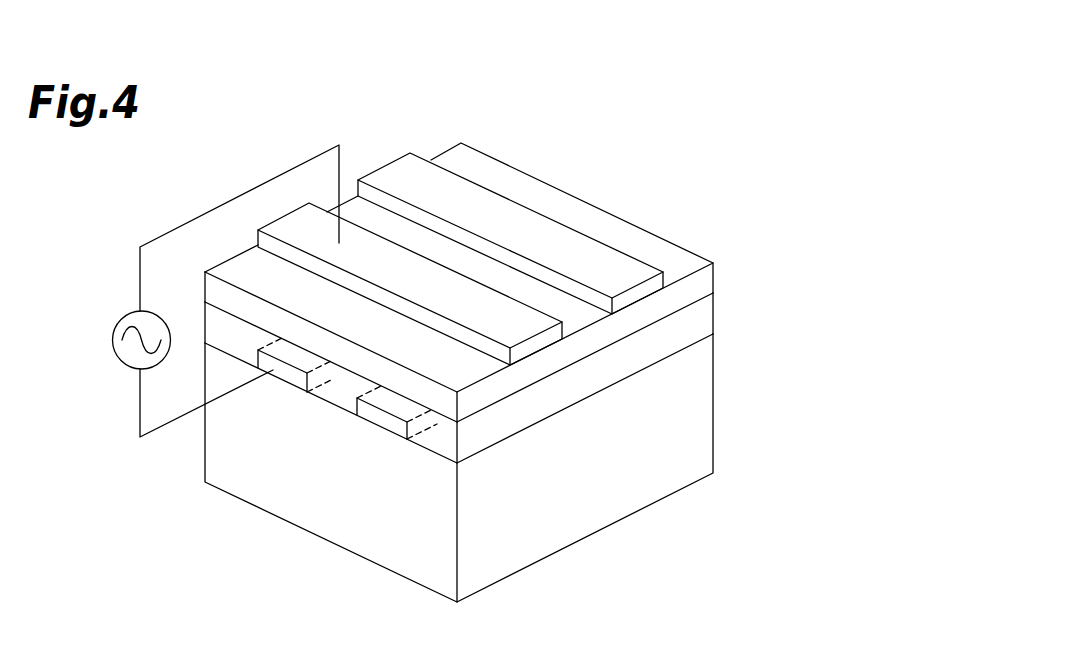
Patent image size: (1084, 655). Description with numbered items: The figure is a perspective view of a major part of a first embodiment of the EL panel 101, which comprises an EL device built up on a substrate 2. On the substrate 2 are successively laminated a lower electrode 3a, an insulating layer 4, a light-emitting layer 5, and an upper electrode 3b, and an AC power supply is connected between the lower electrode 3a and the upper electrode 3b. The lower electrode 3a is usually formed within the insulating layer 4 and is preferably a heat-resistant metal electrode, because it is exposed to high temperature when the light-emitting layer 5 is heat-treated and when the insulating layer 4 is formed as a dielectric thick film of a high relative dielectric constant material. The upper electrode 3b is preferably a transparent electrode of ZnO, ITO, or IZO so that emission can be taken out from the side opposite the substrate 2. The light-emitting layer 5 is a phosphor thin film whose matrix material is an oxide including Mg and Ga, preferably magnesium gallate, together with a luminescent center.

The EL panel 101 is at (593, 128).
The substrate 2 is at (713, 428).
The lower electrode 3a is at (393, 425).
The upper electrode 3b is at (577, 257).
The insulating layer 4 is at (713, 322).
The light-emitting layer 5 is at (713, 277).